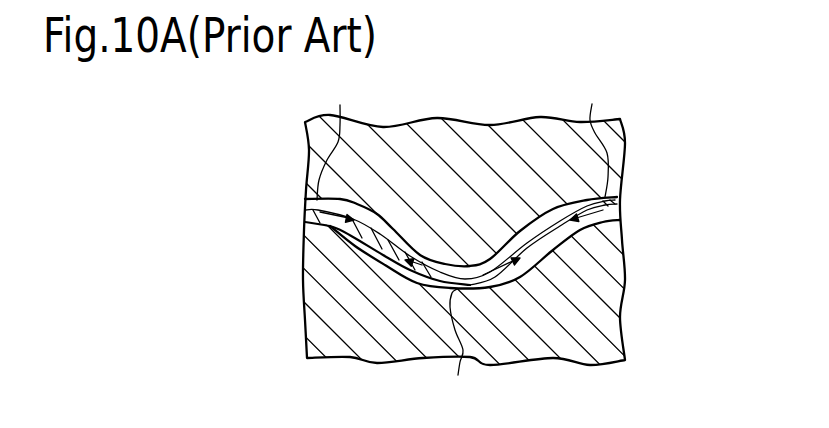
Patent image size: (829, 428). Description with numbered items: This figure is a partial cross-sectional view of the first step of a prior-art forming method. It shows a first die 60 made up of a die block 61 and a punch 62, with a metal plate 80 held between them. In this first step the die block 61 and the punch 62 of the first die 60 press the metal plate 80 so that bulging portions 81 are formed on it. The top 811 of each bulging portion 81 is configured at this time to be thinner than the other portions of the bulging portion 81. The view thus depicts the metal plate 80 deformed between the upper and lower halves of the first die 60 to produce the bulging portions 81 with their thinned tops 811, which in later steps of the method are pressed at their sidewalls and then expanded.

The first die 60 is at (685, 145).
The die block 61 is at (617, 262).
The punch 62 is at (617, 155).
The metal plate 80 is at (304, 211).
The bulging portion 81 is at (398, 255).
The top 811 is at (464, 239).